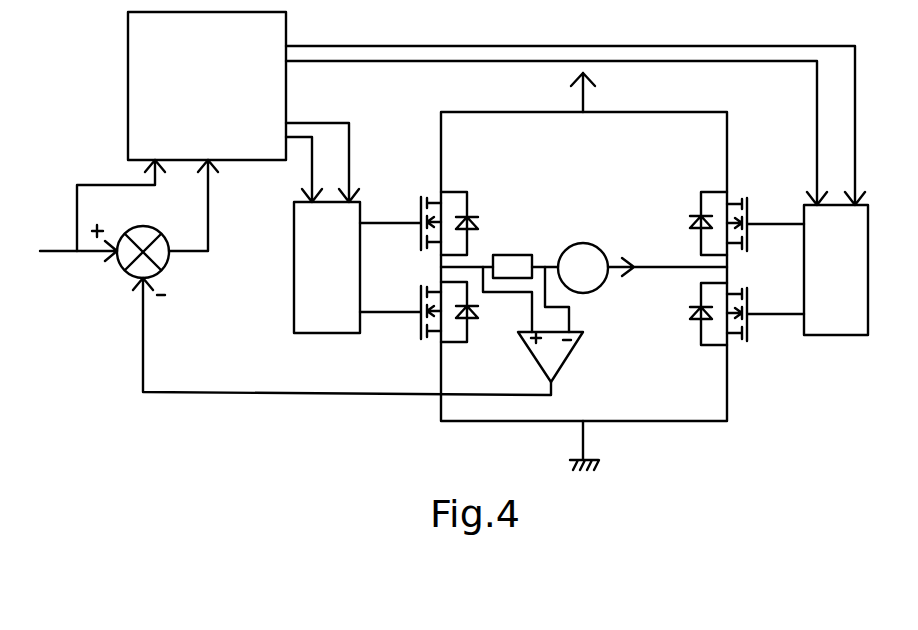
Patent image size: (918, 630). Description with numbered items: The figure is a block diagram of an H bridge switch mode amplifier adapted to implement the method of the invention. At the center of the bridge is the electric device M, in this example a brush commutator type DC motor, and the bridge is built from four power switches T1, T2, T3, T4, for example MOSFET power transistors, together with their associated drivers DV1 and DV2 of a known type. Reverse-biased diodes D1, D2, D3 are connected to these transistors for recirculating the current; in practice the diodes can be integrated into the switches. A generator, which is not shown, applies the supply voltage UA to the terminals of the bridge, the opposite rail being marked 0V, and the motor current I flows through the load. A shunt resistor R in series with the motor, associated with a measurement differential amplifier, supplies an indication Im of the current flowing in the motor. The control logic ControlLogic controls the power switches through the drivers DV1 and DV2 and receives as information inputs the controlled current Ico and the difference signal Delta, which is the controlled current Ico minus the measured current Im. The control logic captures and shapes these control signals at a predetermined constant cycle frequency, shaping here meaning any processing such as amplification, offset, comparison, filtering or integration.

The control logic ControlLogic is at (207, 86).
The driver DV1 is at (327, 267).
The driver DV2 is at (836, 270).
The power switch T1 is at (400, 222).
The power switch T2 is at (400, 311).
The power switch T3 is at (765, 313).
The power switch T4 is at (765, 221).
The reverse-biased diode D1 is at (481, 223).
The reverse-biased diode D2 is at (584, 272).
The reverse-biased diode D3 is at (689, 314).
The shunt resistor R is at (499, 251).
The electric device M is at (583, 268).
The motor current I is at (632, 307).
The measured current Im is at (342, 336).
The controlled current Ico is at (72, 265).
The difference signal Delta is at (226, 243).
The supply voltage UA is at (603, 92).
The ground 0V is at (603, 445).